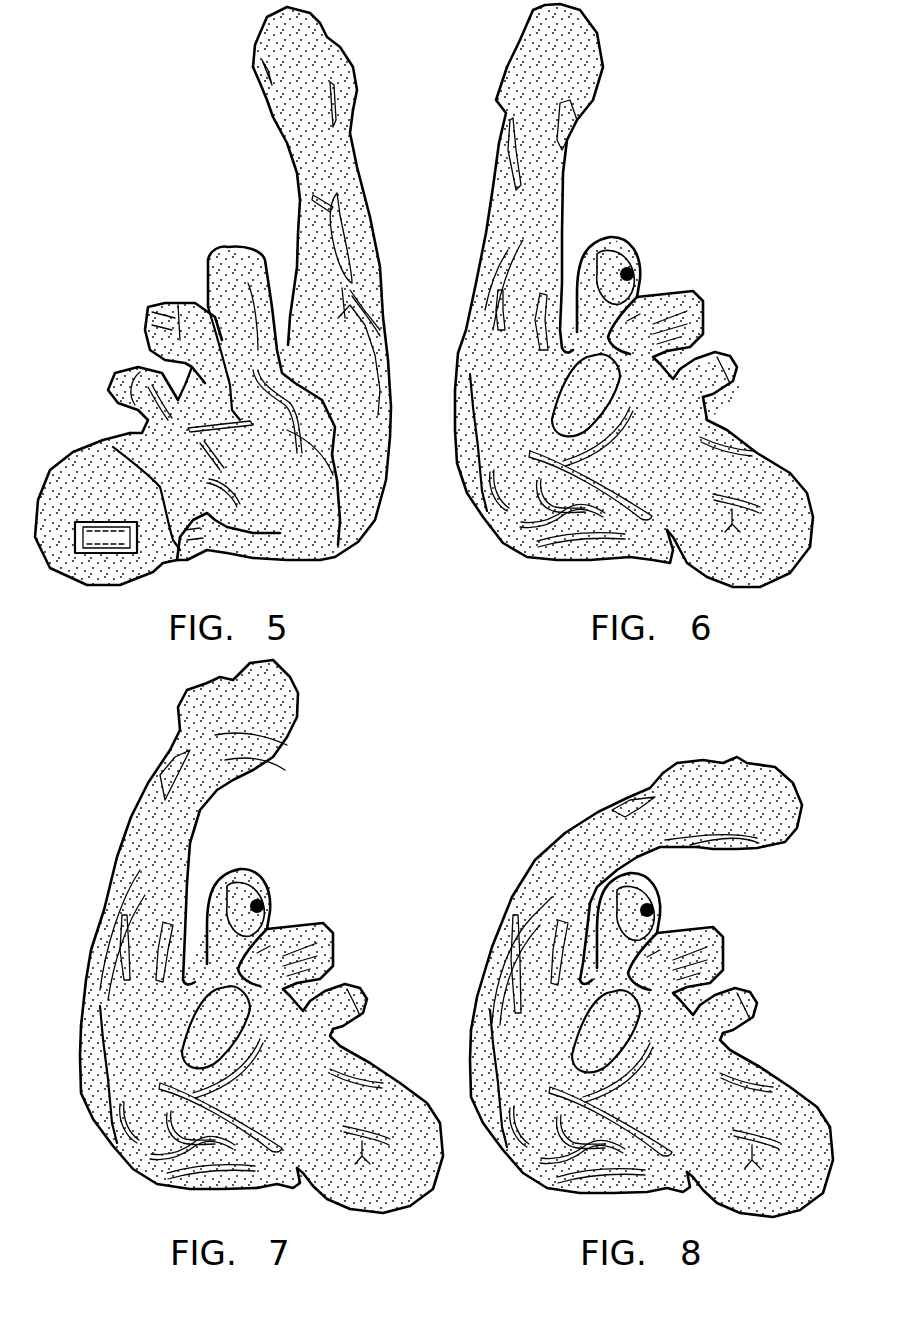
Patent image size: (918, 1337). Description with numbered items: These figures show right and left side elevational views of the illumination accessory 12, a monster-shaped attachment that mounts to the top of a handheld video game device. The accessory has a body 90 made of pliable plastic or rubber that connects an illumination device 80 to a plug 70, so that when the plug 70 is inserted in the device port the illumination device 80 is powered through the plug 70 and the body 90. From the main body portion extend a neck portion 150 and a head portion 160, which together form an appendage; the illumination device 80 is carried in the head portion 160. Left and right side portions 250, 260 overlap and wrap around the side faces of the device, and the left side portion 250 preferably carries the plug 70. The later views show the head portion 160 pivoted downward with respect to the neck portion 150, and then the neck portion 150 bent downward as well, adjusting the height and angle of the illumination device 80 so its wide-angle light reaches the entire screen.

In FIG. 5, the illumination accessory 12 is at (148, 163).
In FIG. 6, the illumination accessory 12 is at (715, 135).
In FIG. 7, the illumination accessory 12 is at (333, 853).
In FIG. 8, the illumination accessory 12 is at (776, 977).
In FIG. 5, the plug 70 is at (100, 556).
In FIG. 5, the illumination device 80 is at (298, 281).
In FIG. 6, the illumination device 80 is at (547, 197).
In FIG. 7, the illumination device 80 is at (197, 843).
In FIG. 8, the illumination device 80 is at (651, 880).
In FIG. 5, the body 90 is at (398, 385).
In FIG. 6, the body 90 is at (455, 326).
In FIG. 7, the body 90 is at (62, 1093).
In FIG. 8, the body 90 is at (460, 1012).
In FIG. 5, the neck portion 150 is at (363, 200).
In FIG. 6, the neck portion 150 is at (480, 258).
In FIG. 7, the neck portion 150 is at (86, 993).
In FIG. 8, the neck portion 150 is at (493, 903).
In FIG. 5, the head portion 160 is at (325, 3).
In FIG. 6, the head portion 160 is at (600, 12).
In FIG. 7, the head portion 160 is at (185, 702).
In FIG. 8, the head portion 160 is at (778, 752).
In FIG. 5, the left side portion 250 is at (101, 530).
In FIG. 6, the left side portion 250 is at (815, 558).
In FIG. 7, the left side portion 250 is at (436, 1205).
In FIG. 8, the left side portion 250 is at (832, 1200).
In FIG. 5, the right side portion 260 is at (197, 562).